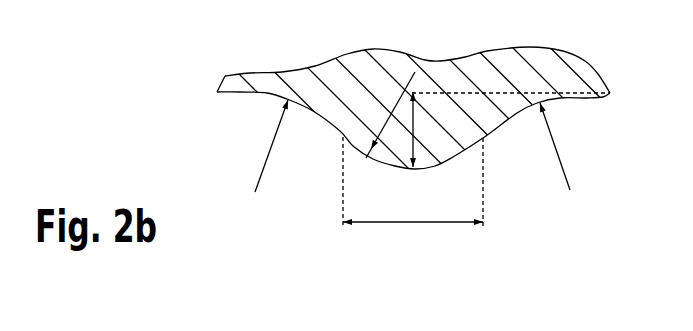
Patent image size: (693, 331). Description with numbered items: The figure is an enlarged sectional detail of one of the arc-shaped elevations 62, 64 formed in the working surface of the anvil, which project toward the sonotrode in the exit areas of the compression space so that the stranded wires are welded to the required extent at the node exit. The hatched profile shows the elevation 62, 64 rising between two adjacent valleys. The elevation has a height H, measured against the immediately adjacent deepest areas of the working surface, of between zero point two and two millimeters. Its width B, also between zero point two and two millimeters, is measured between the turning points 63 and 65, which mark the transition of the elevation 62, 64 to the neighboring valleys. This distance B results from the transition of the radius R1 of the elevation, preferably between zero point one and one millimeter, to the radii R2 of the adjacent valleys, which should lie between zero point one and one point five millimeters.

The elevation 62 is at (326, 172).
The turning point 63 is at (343, 136).
The elevation 64 is at (413, 172).
The turning point 65 is at (483, 137).
The radius of the elevation R1 is at (382, 127).
The radius of the adjacent valley R2 is at (597, 158).
The height of the elevation H is at (412, 142).
The width of the elevation B is at (410, 226).